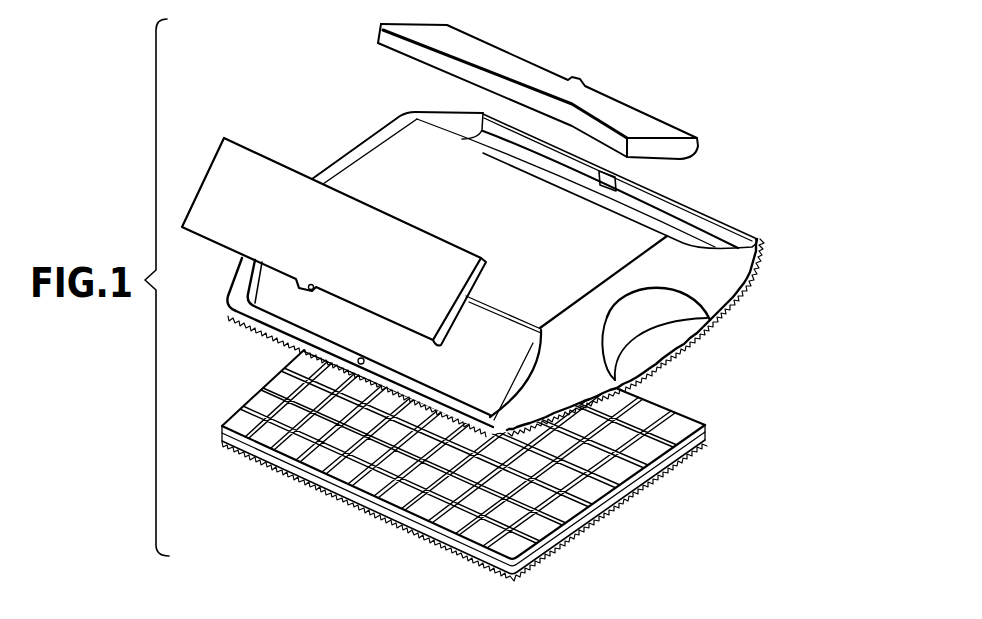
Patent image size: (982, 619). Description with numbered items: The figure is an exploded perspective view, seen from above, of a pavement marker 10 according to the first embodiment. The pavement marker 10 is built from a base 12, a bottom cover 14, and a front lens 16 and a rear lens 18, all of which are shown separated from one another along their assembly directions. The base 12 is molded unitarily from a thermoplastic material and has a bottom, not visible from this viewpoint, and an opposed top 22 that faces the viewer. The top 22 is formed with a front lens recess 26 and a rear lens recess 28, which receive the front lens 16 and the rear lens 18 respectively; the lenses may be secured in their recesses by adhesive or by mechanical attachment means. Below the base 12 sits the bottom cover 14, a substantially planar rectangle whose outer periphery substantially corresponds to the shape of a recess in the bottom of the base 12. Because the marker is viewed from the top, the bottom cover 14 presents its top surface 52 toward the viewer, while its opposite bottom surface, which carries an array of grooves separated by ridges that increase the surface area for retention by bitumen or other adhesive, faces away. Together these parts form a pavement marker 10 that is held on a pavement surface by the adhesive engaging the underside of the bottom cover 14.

The pavement marker 10 is at (772, 176).
The base 12 is at (232, 338).
The bottom cover 14 is at (272, 472).
The front lens 16 is at (236, 138).
The rear lens 18 is at (380, 27).
The top 22 is at (389, 148).
The front lens recess 26 is at (487, 365).
The rear lens recess 28 is at (676, 227).
The top surface 52 is at (662, 421).